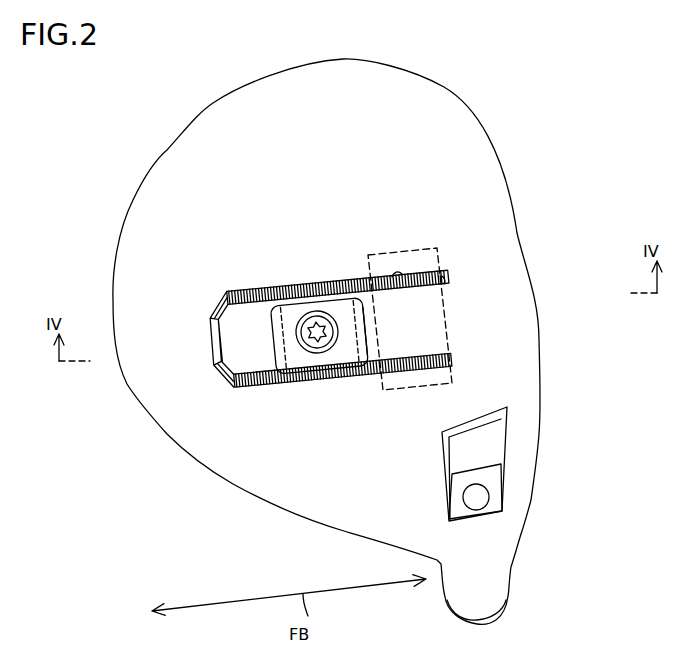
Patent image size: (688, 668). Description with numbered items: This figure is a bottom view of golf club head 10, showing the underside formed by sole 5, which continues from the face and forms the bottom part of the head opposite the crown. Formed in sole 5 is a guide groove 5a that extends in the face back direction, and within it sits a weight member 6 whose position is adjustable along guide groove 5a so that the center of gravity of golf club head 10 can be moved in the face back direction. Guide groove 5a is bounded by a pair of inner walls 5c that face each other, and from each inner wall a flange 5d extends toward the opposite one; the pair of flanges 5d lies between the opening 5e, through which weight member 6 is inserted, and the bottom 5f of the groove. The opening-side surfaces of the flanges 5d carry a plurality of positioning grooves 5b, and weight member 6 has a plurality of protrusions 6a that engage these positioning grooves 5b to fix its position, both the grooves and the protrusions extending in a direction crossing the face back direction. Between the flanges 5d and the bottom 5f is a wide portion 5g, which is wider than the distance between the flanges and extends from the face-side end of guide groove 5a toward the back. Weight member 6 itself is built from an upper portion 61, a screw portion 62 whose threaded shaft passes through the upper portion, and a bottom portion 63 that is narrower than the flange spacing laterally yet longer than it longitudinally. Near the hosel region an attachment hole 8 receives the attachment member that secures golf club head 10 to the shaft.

The golf club head 10 is at (344, 341).
The sole 5 is at (313, 197).
The guide groove 5a is at (360, 280).
The positioning grooves 5b is at (394, 276).
The inner walls 5c is at (441, 277).
The flanges 5d is at (410, 284).
The opening 5e is at (432, 372).
The bottom 5f is at (404, 349).
The wide portion 5g is at (434, 394).
The weight member 6 is at (338, 350).
The protrusions 6a is at (341, 328).
The upper portion 61 is at (319, 336).
The screw portion 62 is at (317, 332).
The bottom portion 63 is at (360, 332).
The attachment hole 8 is at (486, 484).